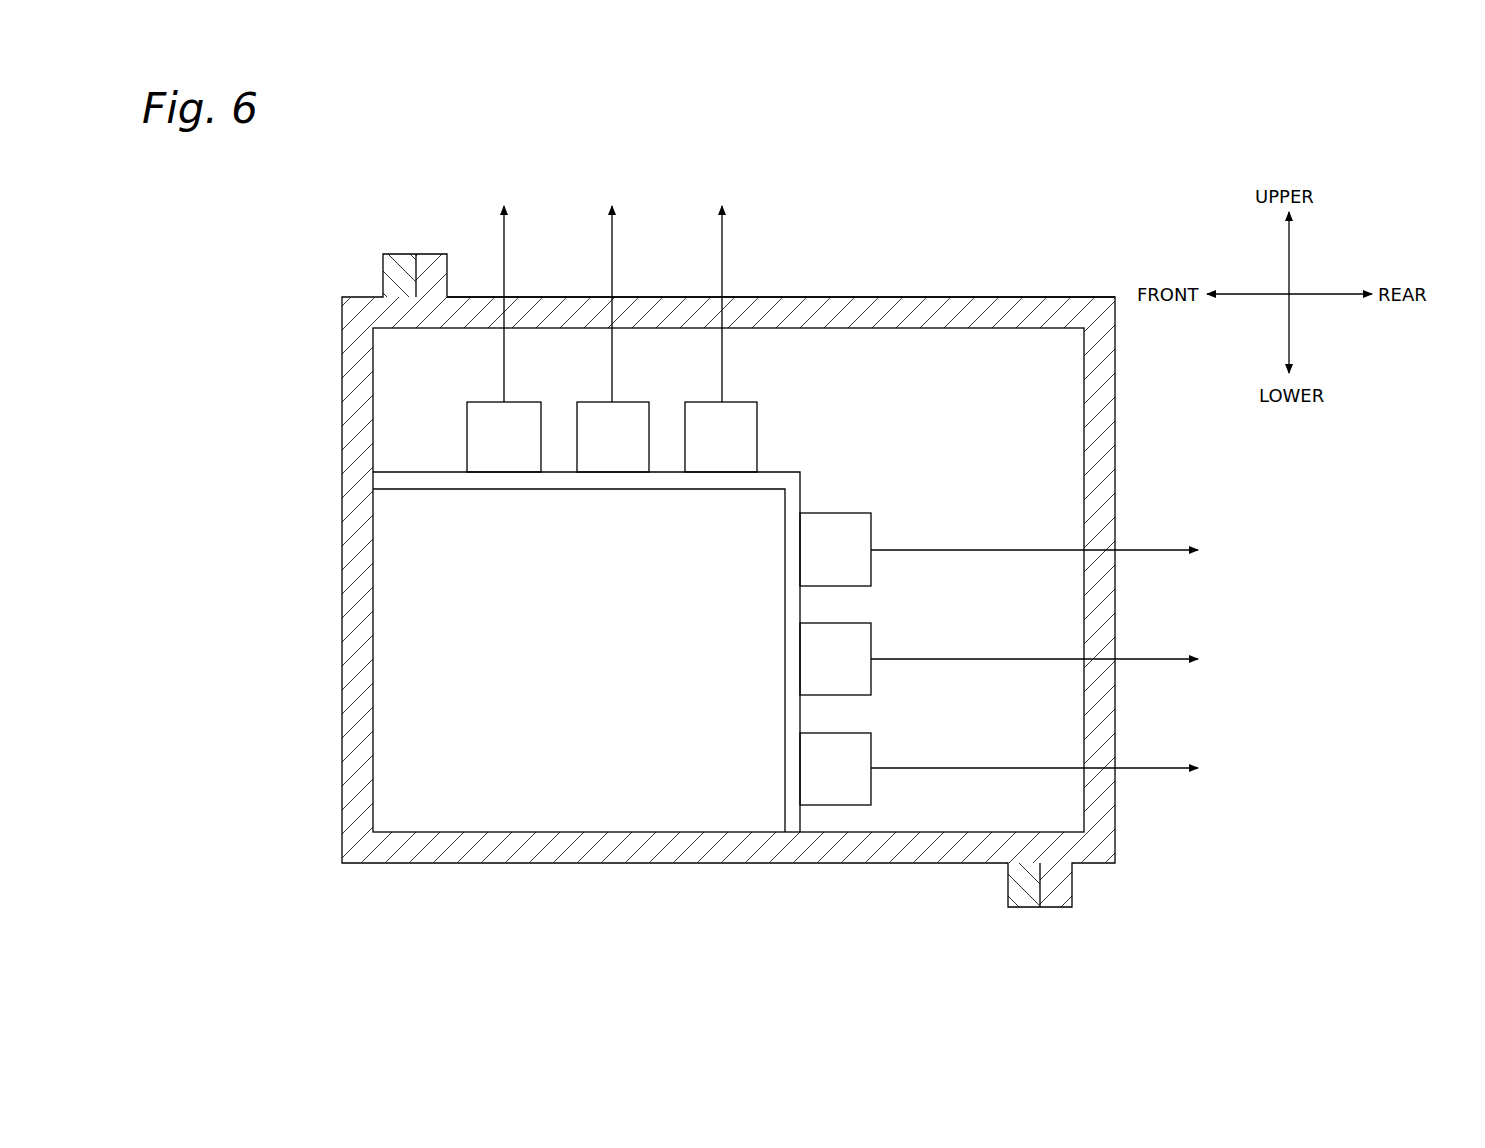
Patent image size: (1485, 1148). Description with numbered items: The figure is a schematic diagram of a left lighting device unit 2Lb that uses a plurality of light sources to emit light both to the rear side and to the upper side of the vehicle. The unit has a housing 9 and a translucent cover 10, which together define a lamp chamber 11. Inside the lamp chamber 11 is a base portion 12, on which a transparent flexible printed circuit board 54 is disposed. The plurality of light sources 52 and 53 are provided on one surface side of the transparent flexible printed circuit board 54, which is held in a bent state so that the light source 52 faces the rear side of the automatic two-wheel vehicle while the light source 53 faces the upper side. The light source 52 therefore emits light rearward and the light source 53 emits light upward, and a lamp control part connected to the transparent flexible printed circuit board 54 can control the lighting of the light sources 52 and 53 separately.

The left lighting device unit 2Lb is at (742, 537).
The housing 9 is at (352, 604).
The translucent cover 10 is at (818, 300).
The lamp chamber 11 is at (948, 360).
The base portion 12 is at (561, 670).
The light source 52 is at (855, 516).
The light source 53 is at (757, 420).
The transparent flexible printed circuit board 54 is at (785, 725).